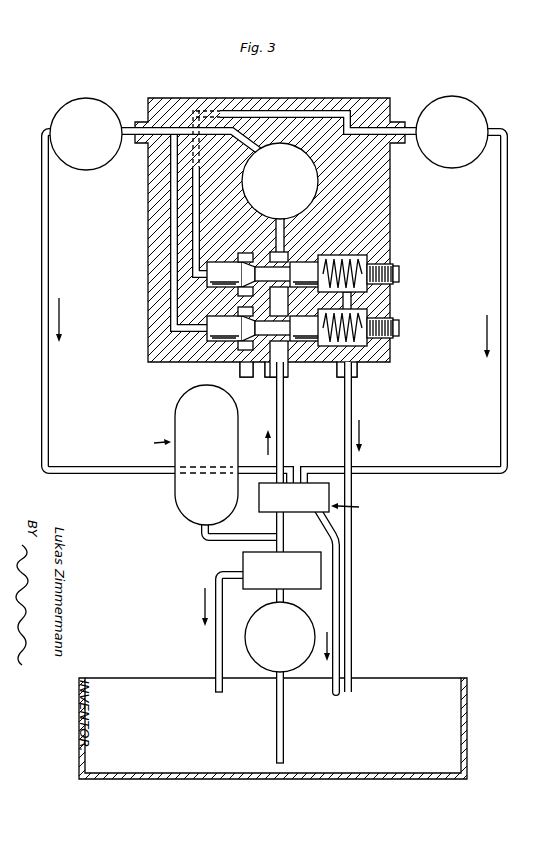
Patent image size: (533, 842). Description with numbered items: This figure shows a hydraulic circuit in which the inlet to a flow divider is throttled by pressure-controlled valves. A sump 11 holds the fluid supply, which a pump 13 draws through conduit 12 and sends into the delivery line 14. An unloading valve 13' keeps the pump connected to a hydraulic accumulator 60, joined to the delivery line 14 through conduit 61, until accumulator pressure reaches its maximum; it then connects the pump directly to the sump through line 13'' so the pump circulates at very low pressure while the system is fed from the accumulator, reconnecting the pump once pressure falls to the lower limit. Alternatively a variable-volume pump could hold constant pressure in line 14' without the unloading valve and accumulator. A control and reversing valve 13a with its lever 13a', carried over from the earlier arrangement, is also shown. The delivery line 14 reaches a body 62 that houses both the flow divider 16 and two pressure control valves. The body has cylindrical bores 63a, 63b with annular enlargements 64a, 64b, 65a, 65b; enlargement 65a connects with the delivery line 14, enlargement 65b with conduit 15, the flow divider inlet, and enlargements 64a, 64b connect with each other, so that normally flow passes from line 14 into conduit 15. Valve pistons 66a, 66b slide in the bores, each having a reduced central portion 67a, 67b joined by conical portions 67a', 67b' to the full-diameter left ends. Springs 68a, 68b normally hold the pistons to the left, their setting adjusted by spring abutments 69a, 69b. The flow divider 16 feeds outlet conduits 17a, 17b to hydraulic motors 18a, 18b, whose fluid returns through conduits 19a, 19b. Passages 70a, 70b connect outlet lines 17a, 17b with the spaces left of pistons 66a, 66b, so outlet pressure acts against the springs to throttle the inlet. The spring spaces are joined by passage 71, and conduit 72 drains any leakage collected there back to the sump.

The sump 11 is at (467, 697).
The conduit 12 is at (287, 694).
The pump 13 is at (287, 637).
The unloading valve 13' is at (282, 570).
The line 13'' is at (204, 633).
The control and reversing valve 13a is at (370, 504).
The valve lever 13a' is at (313, 592).
The delivery line 14 is at (288, 483).
The line 14' is at (255, 524).
The conduit 15 is at (362, 212).
The flow divider 16 is at (280, 146).
The outlet conduit 17a is at (130, 128).
The outlet conduit 17b is at (418, 128).
The hydraulic motor 18a is at (85, 98).
The hydraulic motor 18b is at (474, 103).
The return conduit 19a is at (40, 333).
The return conduit 19b is at (500, 407).
The hydraulic accumulator 60 is at (151, 455).
The conduit 61 is at (205, 537).
The body 62 is at (326, 100).
The cylindrical bore 63a is at (223, 345).
The cylindrical bore 63b is at (228, 265).
The annular enlargement 64a is at (266, 363).
The annular enlargement 64b is at (242, 262).
The annular enlargement 65a is at (271, 378).
The annular enlargement 65b is at (346, 240).
The valve piston 66a is at (150, 348).
The valve piston 66b is at (214, 291).
The reduced central portion 67a is at (305, 375).
The conical portion 67a' is at (189, 388).
The reduced central portion 67b is at (391, 238).
The conical portion 67b' is at (164, 314).
The spring 68a is at (393, 352).
The spring 68b is at (383, 250).
The adjustable spring abutment 69a is at (399, 324).
The adjustable spring abutment 69b is at (393, 268).
The passage 70a is at (173, 204).
The passage 70b is at (193, 182).
The passage 71 is at (393, 297).
The conduit 72 is at (352, 486).